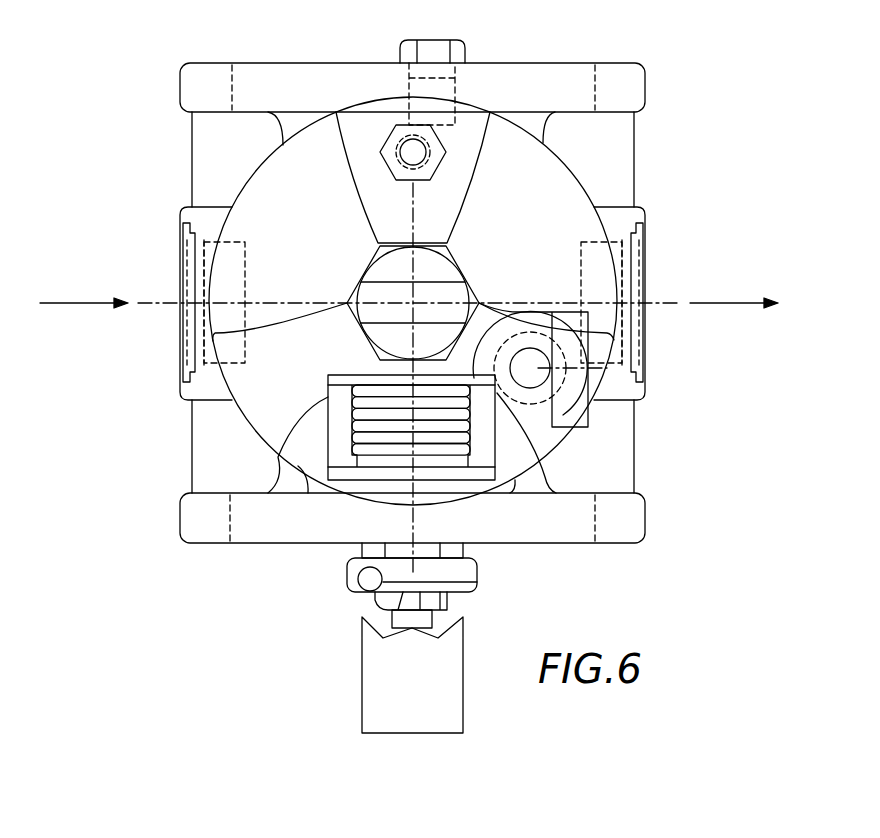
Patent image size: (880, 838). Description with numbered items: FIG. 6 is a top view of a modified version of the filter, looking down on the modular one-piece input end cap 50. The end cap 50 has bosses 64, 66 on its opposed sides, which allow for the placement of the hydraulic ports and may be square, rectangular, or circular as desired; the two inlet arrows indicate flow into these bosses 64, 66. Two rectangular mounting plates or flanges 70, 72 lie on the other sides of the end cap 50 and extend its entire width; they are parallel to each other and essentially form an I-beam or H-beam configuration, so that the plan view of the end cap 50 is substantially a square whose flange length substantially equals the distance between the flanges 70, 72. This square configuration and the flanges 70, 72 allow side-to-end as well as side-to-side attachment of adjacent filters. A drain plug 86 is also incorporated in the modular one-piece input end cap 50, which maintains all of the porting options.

The one-piece input end cap 50 is at (406, 371).
The boss 64 is at (180, 343).
The boss 66 is at (645, 357).
The mounting flange 70 is at (568, 535).
The mounting flange 72 is at (567, 72).
The drain plug 86 is at (400, 52).